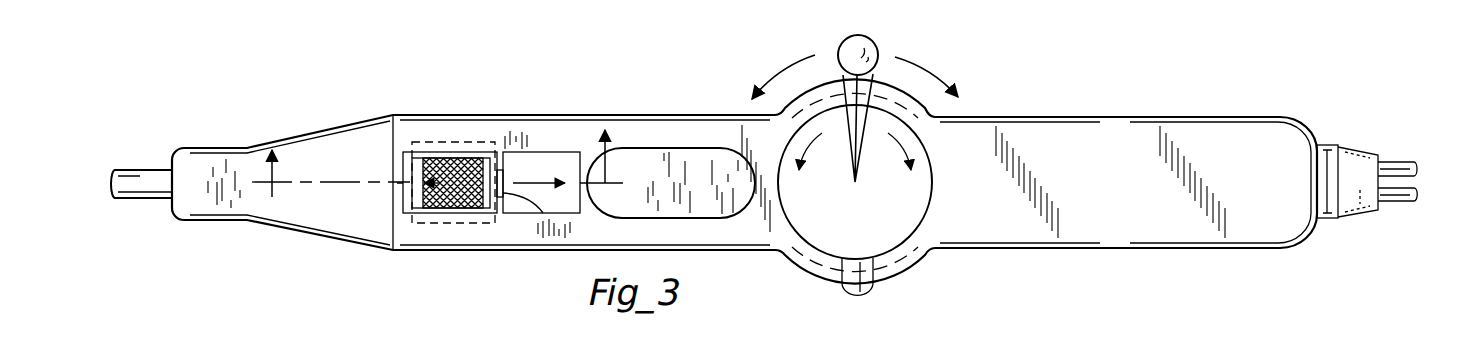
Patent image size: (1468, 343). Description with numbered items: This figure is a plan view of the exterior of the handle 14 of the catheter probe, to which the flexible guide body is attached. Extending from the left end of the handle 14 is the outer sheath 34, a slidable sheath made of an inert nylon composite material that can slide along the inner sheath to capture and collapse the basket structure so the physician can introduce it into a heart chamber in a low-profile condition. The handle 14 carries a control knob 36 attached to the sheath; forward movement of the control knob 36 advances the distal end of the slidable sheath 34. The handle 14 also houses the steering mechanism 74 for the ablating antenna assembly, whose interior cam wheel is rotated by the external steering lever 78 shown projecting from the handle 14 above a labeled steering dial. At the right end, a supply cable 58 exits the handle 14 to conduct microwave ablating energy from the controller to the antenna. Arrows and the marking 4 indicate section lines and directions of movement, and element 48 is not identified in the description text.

The handle 14 is at (1129, 194).
The outer sheath 34 is at (147, 180).
The control knob 36 is at (455, 168).
The section line 4- 4 is at (438, 172).
The steering lever 78 is at (874, 45).
The steering mechanism 74 is at (970, 100).
The supply cable 58 is at (1402, 161).
The electrical connector 48 is at (1400, 202).